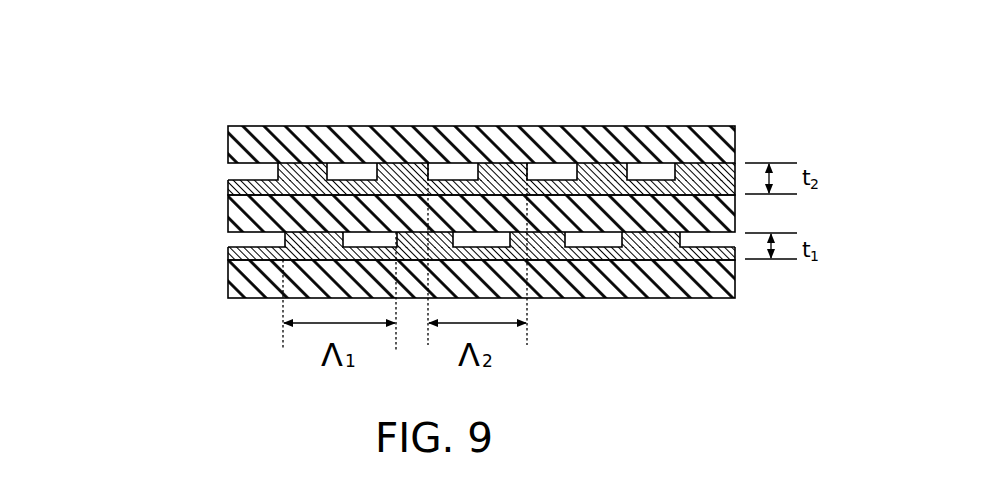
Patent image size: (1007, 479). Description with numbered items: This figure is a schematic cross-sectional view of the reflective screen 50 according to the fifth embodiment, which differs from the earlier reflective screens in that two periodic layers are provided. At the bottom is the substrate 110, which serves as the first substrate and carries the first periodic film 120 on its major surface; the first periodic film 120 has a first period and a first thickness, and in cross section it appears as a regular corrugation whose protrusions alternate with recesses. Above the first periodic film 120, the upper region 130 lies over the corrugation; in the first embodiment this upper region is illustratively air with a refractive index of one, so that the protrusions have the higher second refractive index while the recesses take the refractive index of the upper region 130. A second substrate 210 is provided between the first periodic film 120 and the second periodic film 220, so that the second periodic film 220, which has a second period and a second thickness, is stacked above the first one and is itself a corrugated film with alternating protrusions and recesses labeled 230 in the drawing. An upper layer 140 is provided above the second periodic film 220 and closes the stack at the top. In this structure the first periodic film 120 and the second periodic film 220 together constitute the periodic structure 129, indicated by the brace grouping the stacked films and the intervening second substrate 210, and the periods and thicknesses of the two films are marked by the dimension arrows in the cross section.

The reflective screen 50 is at (822, 81).
The upper layer 140 is at (621, 126).
The periodic structure 129 is at (84, 177).
The upper patterned electrode elements 230 is at (232, 171).
The second periodic film 220 is at (232, 192).
The second substrate 210 is at (232, 222).
The upper region 130 is at (234, 237).
The first periodic film 120 is at (232, 253).
The substrate 110 is at (234, 299).